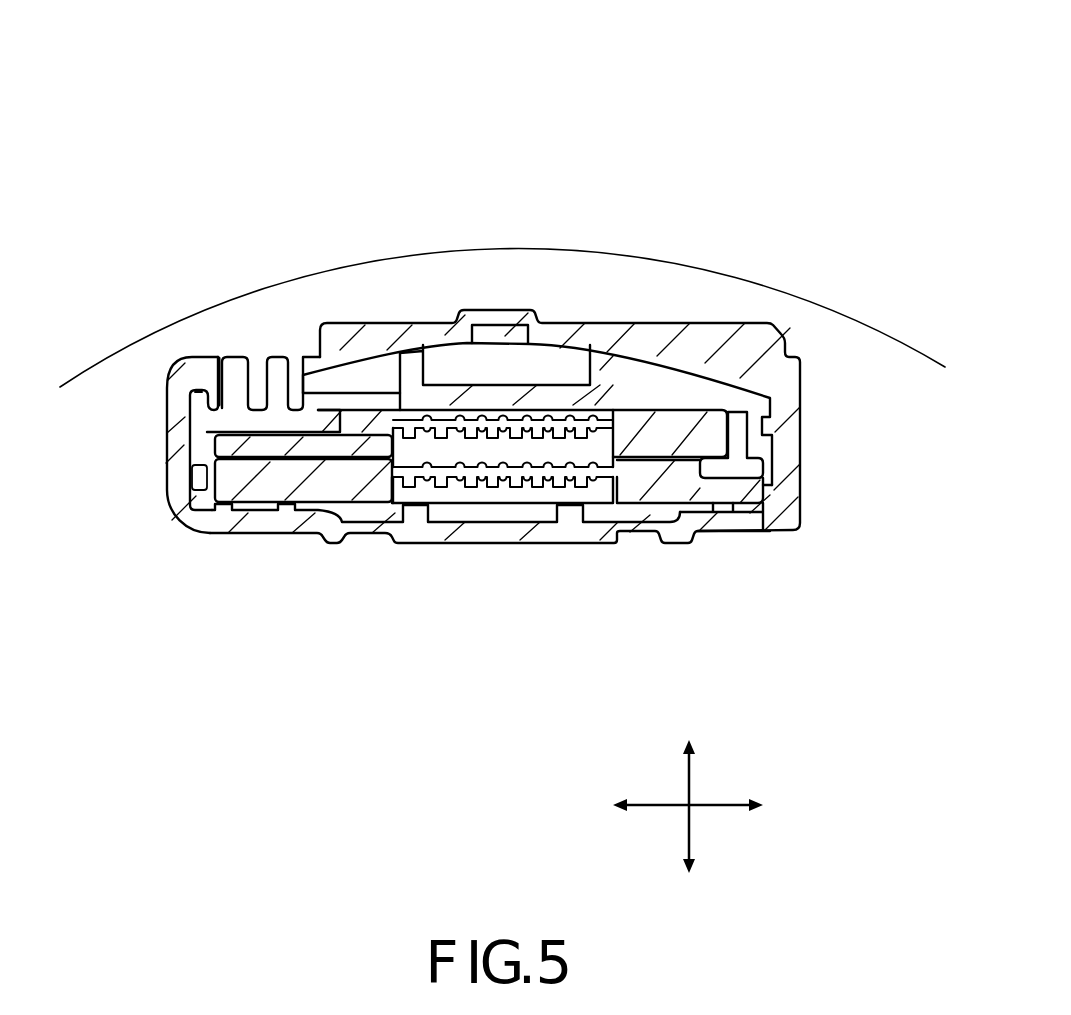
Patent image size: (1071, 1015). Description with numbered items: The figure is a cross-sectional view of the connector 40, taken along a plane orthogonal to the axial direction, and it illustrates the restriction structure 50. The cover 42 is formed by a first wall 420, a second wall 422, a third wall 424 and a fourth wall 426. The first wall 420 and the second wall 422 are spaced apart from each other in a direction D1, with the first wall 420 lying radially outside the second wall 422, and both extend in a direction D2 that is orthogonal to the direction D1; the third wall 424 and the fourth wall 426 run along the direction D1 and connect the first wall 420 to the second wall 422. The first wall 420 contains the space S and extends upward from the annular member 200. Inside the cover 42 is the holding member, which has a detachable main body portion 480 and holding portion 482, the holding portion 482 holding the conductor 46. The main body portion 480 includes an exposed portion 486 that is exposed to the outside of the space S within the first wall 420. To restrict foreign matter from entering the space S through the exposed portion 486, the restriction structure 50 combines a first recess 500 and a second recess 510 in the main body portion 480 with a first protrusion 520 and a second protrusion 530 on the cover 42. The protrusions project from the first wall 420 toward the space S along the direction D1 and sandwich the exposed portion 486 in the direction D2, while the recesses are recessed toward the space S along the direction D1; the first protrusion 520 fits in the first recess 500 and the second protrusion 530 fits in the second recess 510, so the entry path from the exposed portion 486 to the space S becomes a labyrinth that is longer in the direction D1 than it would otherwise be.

The connector 40 is at (732, 569).
The cover 42 is at (732, 117).
The conductor 46 is at (540, 430).
The restriction structure 50 is at (337, 76).
The annular member 200 is at (830, 305).
The first wall 420 is at (692, 343).
The second wall 422 is at (608, 530).
The third wall 424 is at (788, 447).
The fourth wall 426 is at (173, 455).
The main body portion 480 is at (410, 395).
The holding portion 482 is at (368, 490).
The exposed portion 486 is at (240, 357).
The first recess 500 is at (299, 395).
The second recess 510 is at (213, 403).
The first protrusion 520 is at (300, 392).
The second protrusion 530 is at (213, 400).
The space S is at (509, 512).
The direction D1 is at (688, 766).
The direction D2 is at (716, 808).